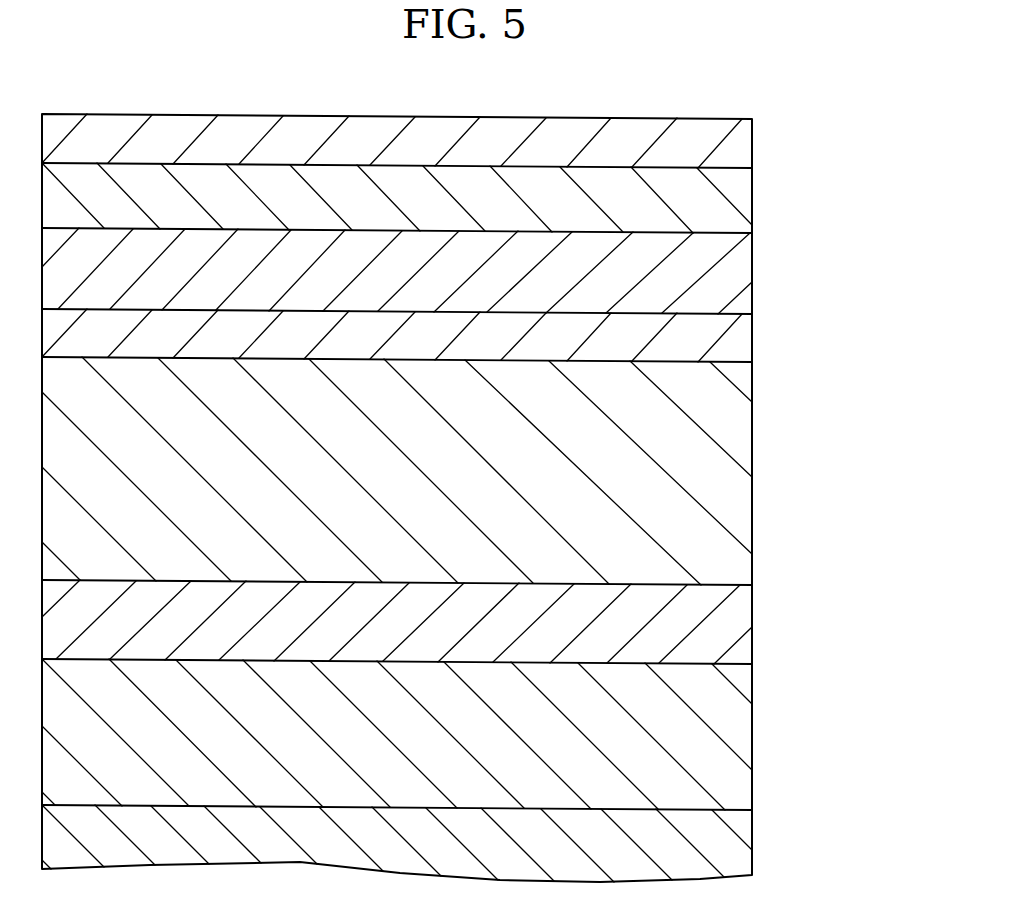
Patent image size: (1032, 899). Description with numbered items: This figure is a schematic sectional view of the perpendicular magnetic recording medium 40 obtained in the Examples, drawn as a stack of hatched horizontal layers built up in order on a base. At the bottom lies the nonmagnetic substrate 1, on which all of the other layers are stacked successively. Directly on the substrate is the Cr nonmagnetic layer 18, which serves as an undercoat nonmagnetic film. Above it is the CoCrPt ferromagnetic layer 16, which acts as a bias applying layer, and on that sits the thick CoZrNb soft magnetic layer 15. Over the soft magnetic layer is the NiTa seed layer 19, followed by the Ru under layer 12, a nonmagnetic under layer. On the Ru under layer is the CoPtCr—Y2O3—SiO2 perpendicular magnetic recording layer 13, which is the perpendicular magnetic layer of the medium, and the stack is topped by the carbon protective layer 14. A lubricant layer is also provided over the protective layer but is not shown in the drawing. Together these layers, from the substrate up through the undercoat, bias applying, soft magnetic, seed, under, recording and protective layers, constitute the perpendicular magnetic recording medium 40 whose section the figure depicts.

The perpendicular magnetic recording medium 40 is at (751, 113).
The carbon protective layer 14 is at (743, 146).
The perpendicular magnetic recording layer 13 is at (743, 195).
The Ru under layer 12 is at (743, 263).
The NiTa seed layer 19 is at (743, 335).
The CoZrNb soft magnetic layer 15 is at (743, 392).
The CoCrPt ferromagnetic layer 16 is at (743, 617).
The Cr nonmagnetic layer 18 is at (743, 737).
The nonmagnetic substrate 1 is at (743, 835).